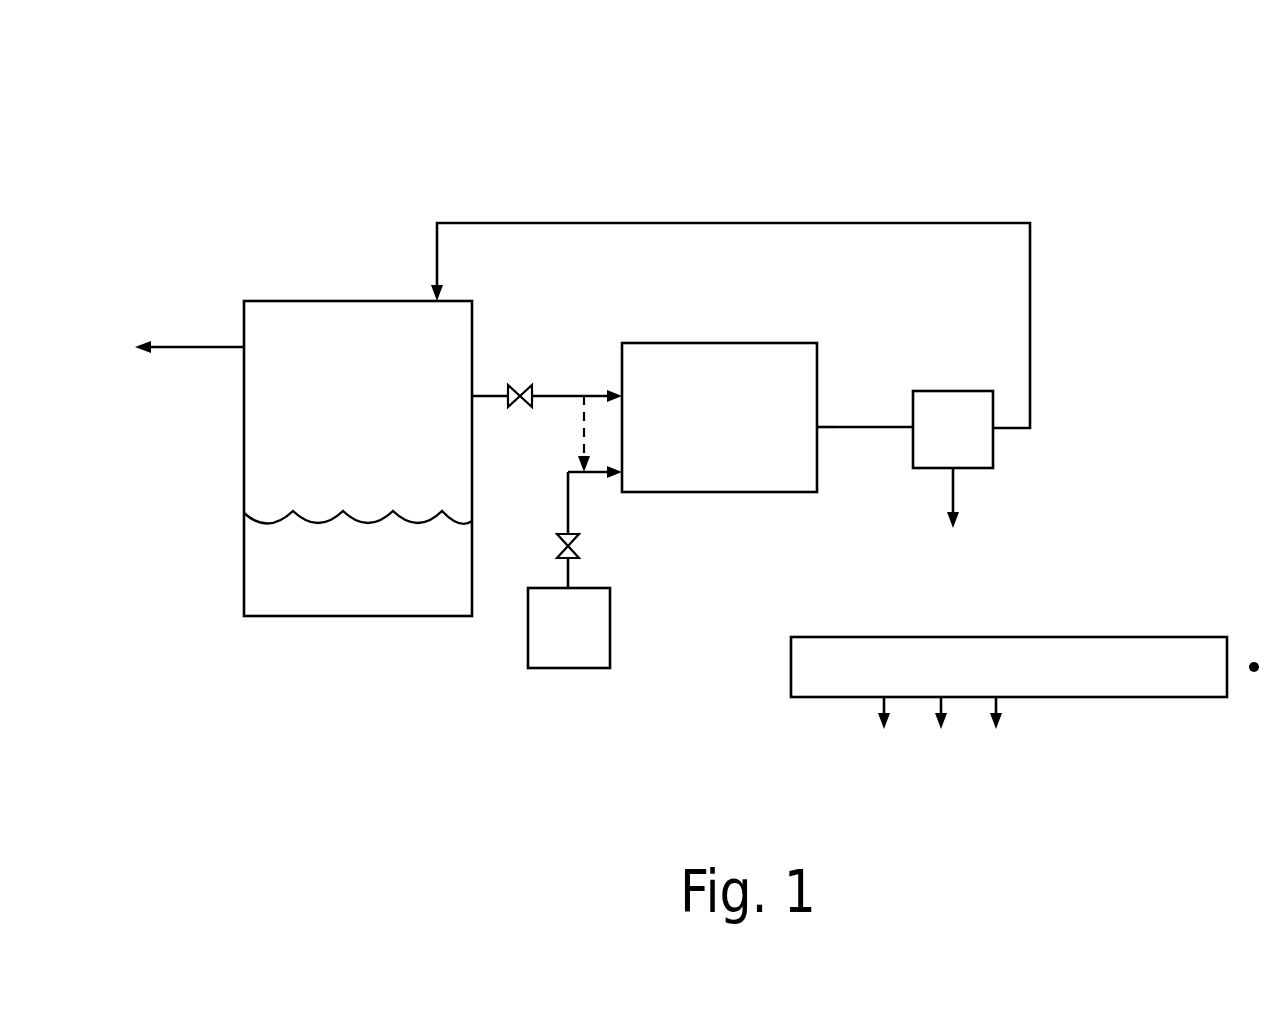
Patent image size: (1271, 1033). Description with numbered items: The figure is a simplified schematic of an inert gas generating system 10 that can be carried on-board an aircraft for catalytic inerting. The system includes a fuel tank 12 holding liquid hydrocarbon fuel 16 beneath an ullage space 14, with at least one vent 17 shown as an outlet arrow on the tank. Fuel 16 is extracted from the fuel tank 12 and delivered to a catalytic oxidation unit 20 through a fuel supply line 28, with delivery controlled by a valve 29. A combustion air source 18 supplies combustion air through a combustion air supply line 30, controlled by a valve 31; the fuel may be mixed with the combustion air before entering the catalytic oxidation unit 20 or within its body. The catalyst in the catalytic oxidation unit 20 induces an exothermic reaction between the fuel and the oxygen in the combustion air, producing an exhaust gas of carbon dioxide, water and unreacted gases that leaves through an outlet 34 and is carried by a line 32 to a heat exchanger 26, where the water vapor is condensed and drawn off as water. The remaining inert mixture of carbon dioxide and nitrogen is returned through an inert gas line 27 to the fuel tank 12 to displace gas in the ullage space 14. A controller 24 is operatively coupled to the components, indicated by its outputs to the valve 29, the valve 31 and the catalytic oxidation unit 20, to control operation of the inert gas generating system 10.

The inert gas generating system 10 is at (1003, 150).
The fuel tank 12 is at (300, 301).
The ullage space 14 is at (343, 406).
The liquid hydrocarbon fuel 16 is at (343, 573).
The vent 17 is at (186, 340).
The combustion air source 18 is at (554, 641).
The catalytic oxidation unit 20 is at (703, 343).
The controller 24 is at (977, 637).
The heat exchanger 26 is at (938, 444).
The inert gas line 27 is at (1030, 342).
The fuel supply line 28 is at (557, 396).
The valve 29 is at (520, 408).
The combustion air supply line 30 is at (568, 499).
The valve 31 is at (557, 546).
The line 32 is at (850, 428).
The outlet 34 is at (817, 420).